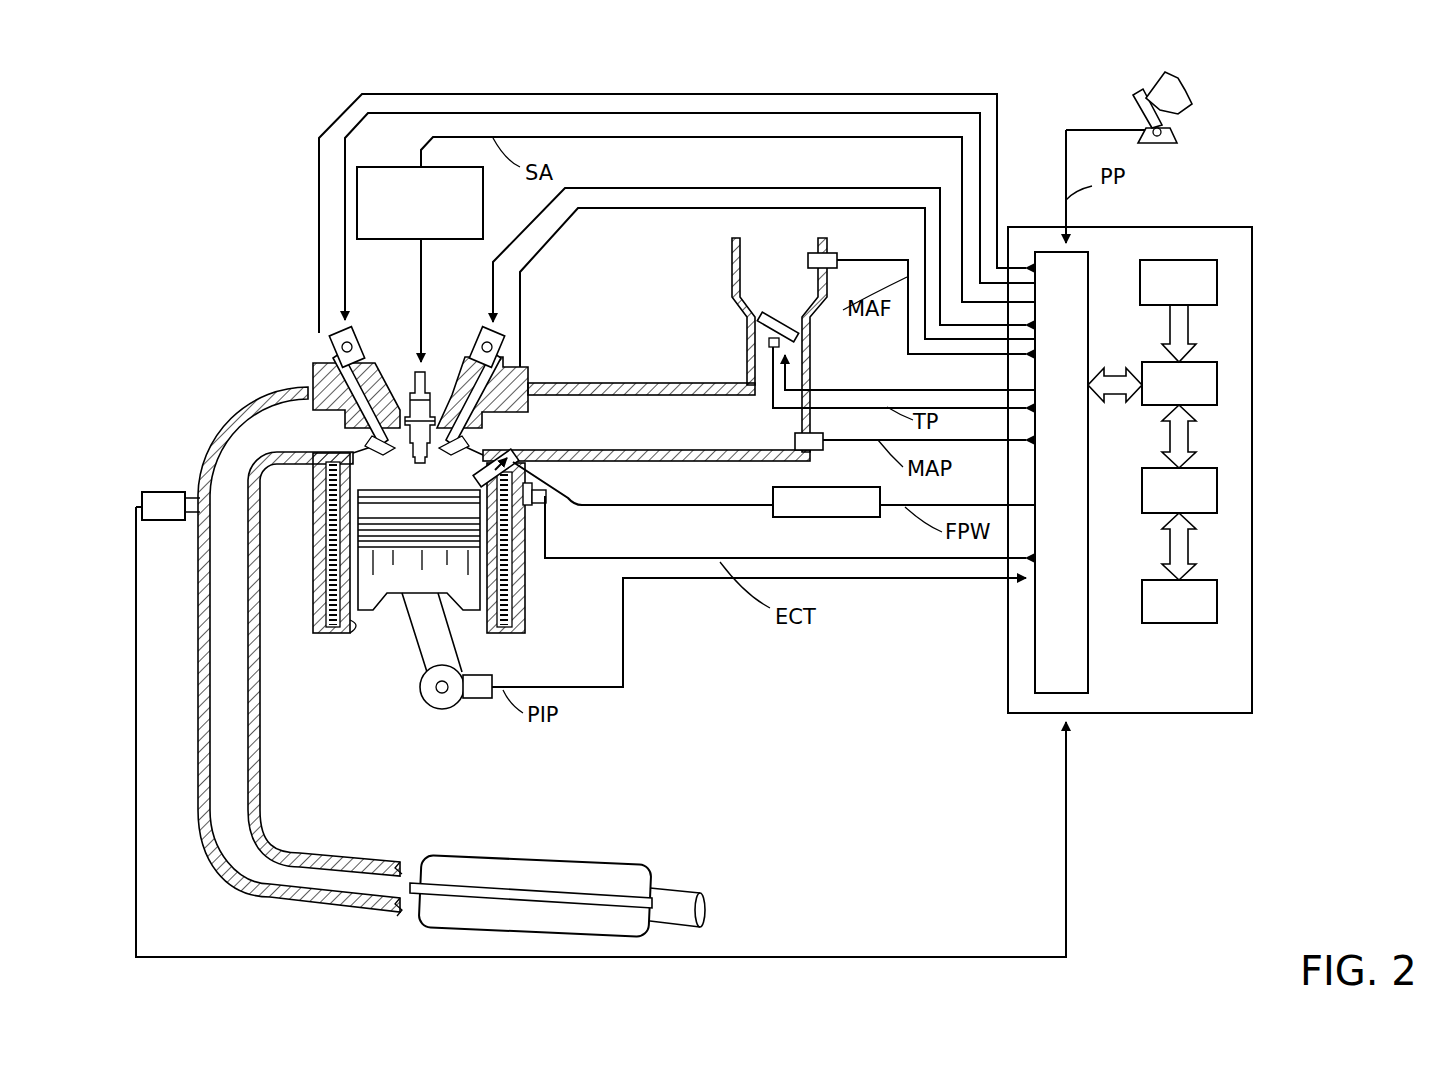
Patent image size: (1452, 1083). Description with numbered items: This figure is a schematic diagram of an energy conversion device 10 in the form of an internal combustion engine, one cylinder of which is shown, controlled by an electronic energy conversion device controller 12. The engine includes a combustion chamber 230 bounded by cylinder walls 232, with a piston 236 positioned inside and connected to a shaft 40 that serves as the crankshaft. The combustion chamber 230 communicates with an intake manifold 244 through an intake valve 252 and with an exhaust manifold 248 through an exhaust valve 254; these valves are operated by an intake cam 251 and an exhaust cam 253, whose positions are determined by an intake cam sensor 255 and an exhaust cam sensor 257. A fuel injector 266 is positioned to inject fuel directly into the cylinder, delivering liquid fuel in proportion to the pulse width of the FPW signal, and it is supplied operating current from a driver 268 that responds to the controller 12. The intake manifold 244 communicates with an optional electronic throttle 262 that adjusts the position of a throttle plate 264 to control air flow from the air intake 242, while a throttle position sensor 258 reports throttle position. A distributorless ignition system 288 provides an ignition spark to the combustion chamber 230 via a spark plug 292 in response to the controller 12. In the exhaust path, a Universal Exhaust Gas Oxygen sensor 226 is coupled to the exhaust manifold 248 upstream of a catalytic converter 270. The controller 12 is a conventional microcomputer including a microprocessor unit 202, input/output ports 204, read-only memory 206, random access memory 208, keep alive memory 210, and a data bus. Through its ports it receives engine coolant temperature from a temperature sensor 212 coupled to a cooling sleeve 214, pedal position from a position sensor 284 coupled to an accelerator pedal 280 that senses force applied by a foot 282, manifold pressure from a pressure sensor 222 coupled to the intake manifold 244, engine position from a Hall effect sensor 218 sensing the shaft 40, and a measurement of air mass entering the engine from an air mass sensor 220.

The energy conversion device 10 is at (243, 315).
The energy conversion device controller 12 is at (1240, 227).
The shaft 40 is at (433, 710).
The microprocessor unit 202 is at (1217, 378).
The input/output ports 204 is at (1090, 257).
The read-only memory 206 is at (1217, 280).
The random access memory 208 is at (1217, 490).
The keep alive memory 210 is at (1217, 600).
The temperature sensor 212 is at (535, 510).
The cooling sleeve 214 is at (507, 578).
The Hall effect sensor 218 is at (468, 700).
The air mass sensor 220 is at (827, 253).
The pressure sensor 222 is at (818, 450).
The Universal Exhaust Gas Oxygen sensor 226 is at (142, 497).
The combustion chamber 230 is at (418, 470).
The cylinder walls 232 is at (362, 620).
The piston 236 is at (402, 577).
The air intake 242 is at (803, 289).
The intake manifold 244 is at (737, 439).
The exhaust manifold 248 is at (307, 441).
The intake cam 251 is at (480, 327).
The intake valve 252 is at (470, 430).
The exhaust cam 253 is at (353, 327).
The exhaust valve 254 is at (317, 407).
The intake cam sensor 255 is at (503, 353).
The exhaust cam sensor 257 is at (333, 347).
The throttle position sensor 258 is at (757, 342).
The electronic throttle 262 is at (803, 320).
The throttle plate 264 is at (760, 317).
The fuel injector 266 is at (540, 488).
The driver 268 is at (803, 518).
The catalytic converter 270 is at (432, 855).
The accelerator pedal 280 is at (1150, 125).
The foot 282 is at (1185, 92).
The position sensor 284 is at (1165, 130).
The distributorless ignition system 288 is at (375, 167).
The spark plug 292 is at (427, 360).